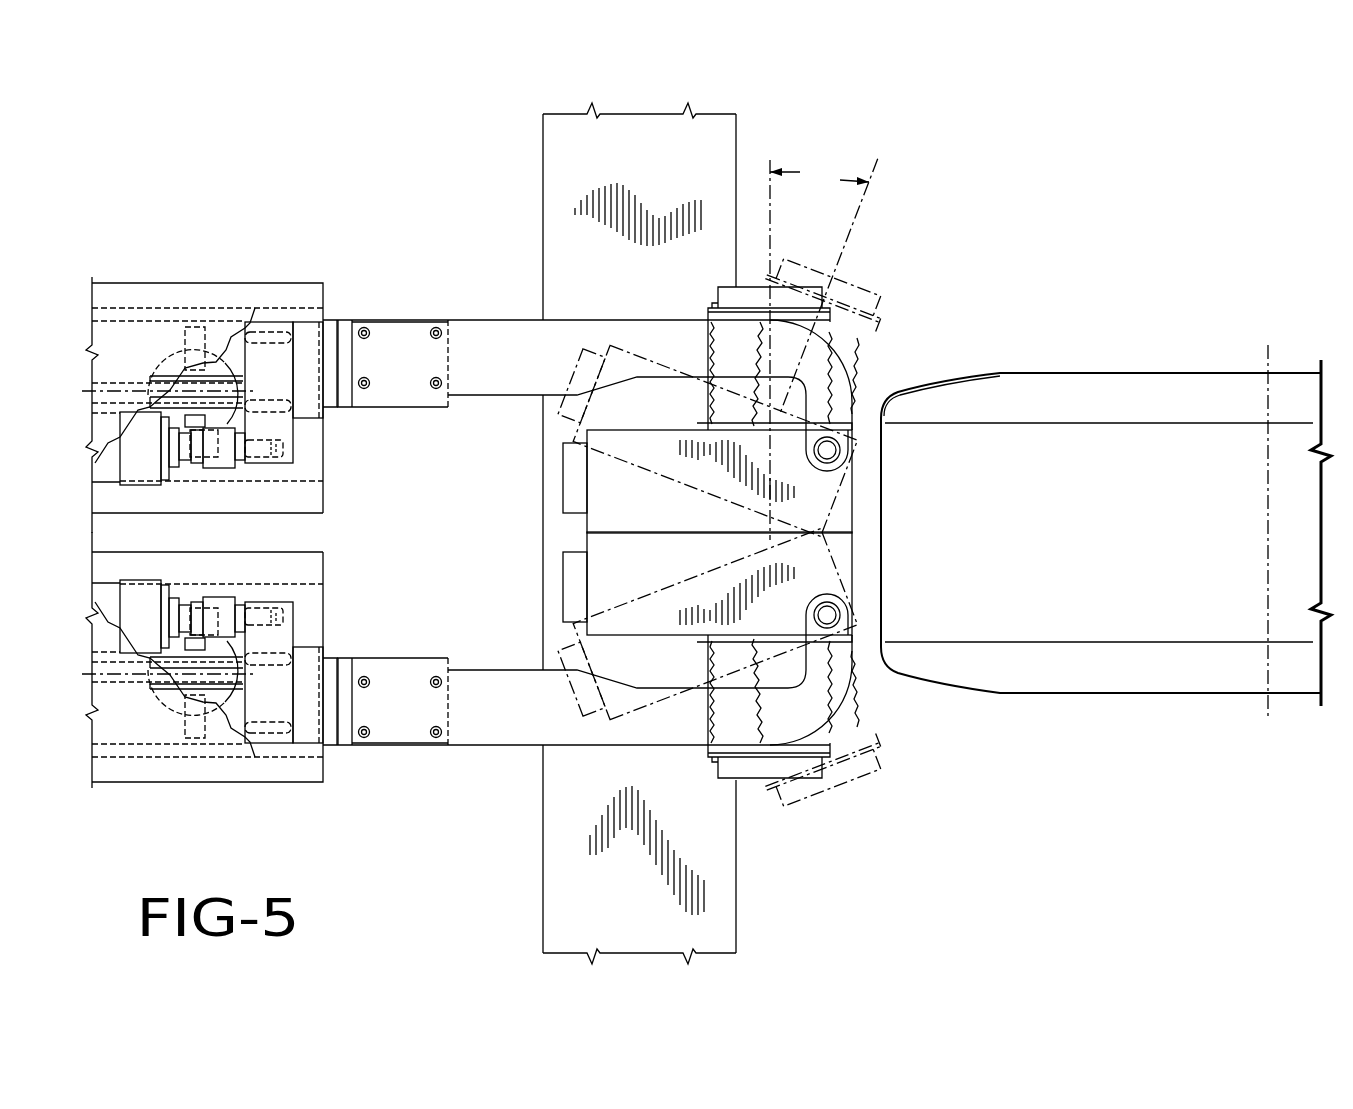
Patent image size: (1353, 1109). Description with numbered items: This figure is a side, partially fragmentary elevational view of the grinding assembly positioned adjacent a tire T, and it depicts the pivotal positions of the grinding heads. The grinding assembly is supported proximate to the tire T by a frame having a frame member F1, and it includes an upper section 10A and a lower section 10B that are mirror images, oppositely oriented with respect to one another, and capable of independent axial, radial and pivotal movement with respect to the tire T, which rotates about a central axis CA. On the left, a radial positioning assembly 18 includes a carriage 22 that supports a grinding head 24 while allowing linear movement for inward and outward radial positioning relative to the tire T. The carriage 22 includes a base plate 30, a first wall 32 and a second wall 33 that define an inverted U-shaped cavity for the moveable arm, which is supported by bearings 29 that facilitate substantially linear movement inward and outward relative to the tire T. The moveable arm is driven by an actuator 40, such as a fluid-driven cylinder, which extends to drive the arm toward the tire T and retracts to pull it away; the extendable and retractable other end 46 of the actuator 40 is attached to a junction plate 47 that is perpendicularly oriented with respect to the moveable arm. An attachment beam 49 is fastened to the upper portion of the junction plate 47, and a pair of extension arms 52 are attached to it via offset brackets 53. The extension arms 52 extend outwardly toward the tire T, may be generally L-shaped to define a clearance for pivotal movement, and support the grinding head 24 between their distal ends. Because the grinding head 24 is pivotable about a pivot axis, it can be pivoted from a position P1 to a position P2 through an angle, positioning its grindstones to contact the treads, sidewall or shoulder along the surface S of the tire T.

The radial positioning assembly 18 is at (90, 243).
The carriage 22 is at (147, 278).
The second wall 33 is at (207, 300).
The bearings 29 is at (239, 330).
The base plate 30 is at (285, 298).
The attachment beam 49 is at (300, 405).
The junction plate 47 is at (272, 428).
The other end of the actuator 46 is at (215, 462).
The actuator 40 is at (130, 491).
The first wall 32 is at (298, 495).
The extension arms 52 is at (497, 348).
The offset brackets 53 is at (415, 400).
The upper section 10A is at (407, 302).
The lower section 10B is at (411, 771).
The grinding head 24 is at (902, 297).
The frame member F1 is at (535, 151).
The position P1 is at (770, 335).
The position P2 is at (838, 283).
The surface S is at (983, 372).
The tire T is at (1063, 366).
The central axis CA is at (1263, 351).